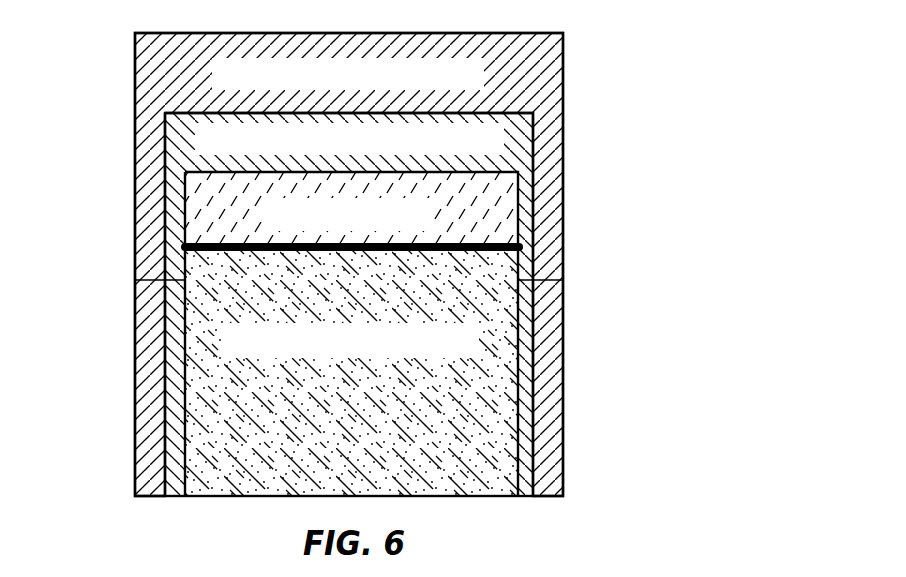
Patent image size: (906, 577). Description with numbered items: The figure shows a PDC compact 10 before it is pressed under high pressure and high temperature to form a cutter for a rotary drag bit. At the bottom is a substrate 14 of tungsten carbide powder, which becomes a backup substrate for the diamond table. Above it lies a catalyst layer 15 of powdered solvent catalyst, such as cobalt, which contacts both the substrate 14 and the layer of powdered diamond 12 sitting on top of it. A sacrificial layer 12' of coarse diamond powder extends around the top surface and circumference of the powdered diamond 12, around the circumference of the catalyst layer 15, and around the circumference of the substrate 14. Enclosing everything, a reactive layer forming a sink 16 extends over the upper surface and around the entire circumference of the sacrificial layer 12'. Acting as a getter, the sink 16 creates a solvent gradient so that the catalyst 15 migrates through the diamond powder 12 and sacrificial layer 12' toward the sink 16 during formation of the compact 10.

The compact 10 is at (729, 356).
The layer of powdered diamond 12 is at (351, 207).
The sacrificial layer of coarse diamond powder 12' is at (353, 304).
The substrate 14 is at (359, 396).
The catalyst layer 15 is at (506, 242).
The reactive layer forming a sink 16 is at (538, 86).